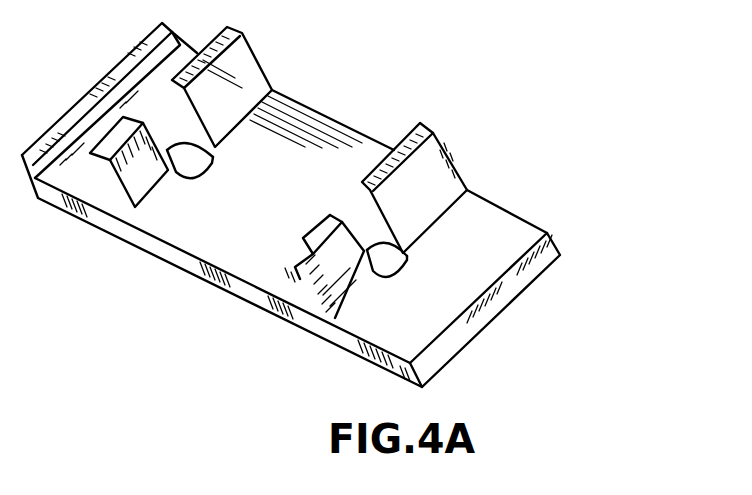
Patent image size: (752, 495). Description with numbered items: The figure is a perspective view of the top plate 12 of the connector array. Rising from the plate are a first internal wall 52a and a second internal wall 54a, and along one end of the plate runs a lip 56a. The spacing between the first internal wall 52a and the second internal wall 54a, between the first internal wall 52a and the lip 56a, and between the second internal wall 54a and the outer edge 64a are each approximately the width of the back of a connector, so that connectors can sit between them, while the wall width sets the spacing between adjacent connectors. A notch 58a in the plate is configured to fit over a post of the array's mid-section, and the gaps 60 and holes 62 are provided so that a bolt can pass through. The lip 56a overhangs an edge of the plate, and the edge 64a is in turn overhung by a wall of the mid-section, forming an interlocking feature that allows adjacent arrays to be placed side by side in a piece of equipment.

The top plate 12 is at (222, 346).
The first internal wall 52a is at (243, 68).
The second internal wall 54a is at (420, 197).
The lip 56a is at (97, 80).
The notch 58a is at (293, 270).
The gaps 60 is at (152, 183).
The holes 62 is at (200, 180).
The edge 64a is at (522, 280).